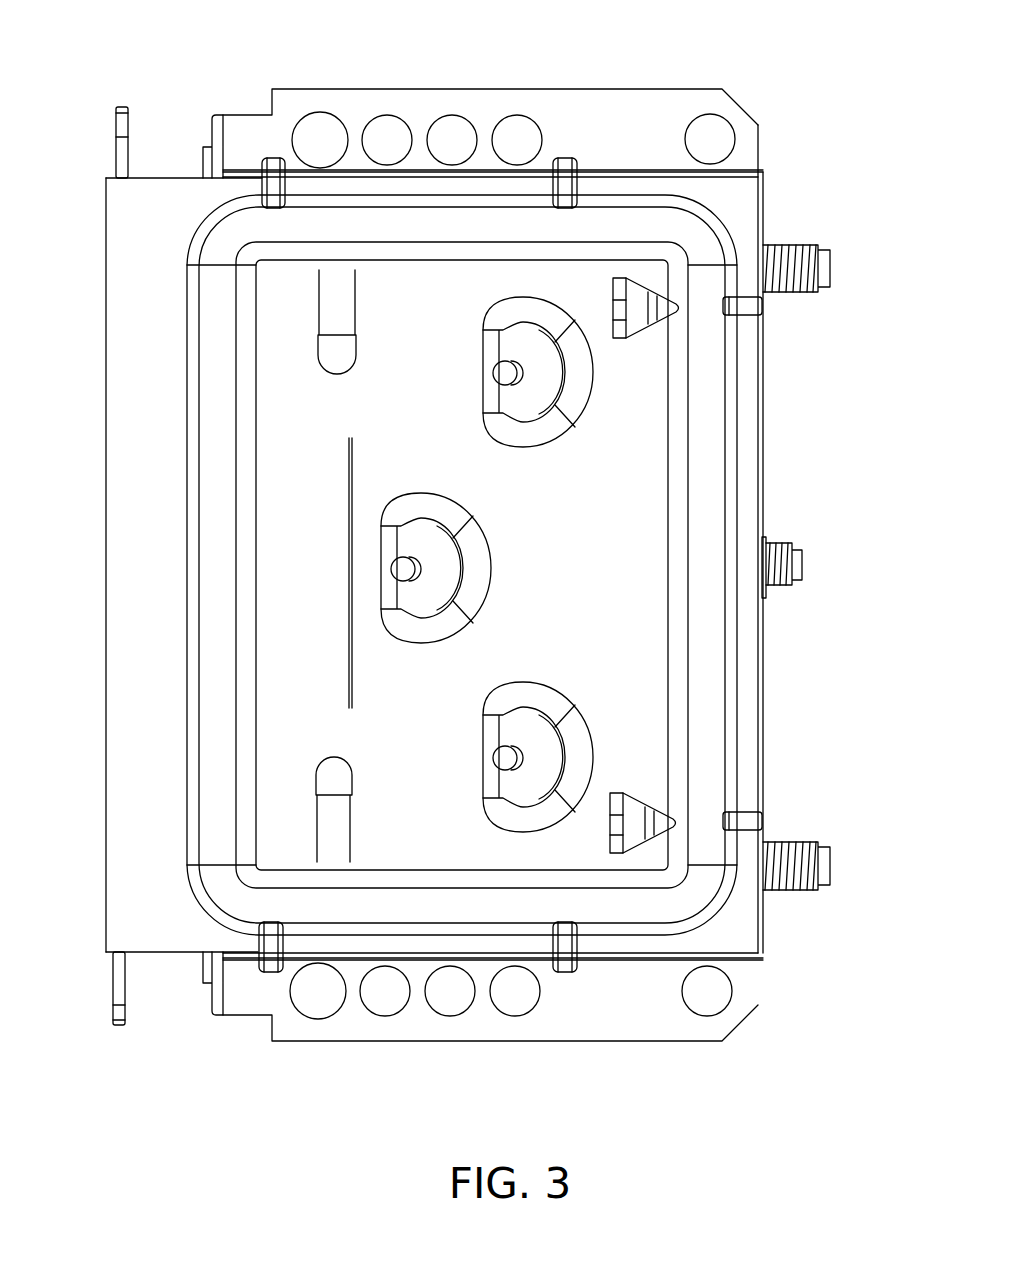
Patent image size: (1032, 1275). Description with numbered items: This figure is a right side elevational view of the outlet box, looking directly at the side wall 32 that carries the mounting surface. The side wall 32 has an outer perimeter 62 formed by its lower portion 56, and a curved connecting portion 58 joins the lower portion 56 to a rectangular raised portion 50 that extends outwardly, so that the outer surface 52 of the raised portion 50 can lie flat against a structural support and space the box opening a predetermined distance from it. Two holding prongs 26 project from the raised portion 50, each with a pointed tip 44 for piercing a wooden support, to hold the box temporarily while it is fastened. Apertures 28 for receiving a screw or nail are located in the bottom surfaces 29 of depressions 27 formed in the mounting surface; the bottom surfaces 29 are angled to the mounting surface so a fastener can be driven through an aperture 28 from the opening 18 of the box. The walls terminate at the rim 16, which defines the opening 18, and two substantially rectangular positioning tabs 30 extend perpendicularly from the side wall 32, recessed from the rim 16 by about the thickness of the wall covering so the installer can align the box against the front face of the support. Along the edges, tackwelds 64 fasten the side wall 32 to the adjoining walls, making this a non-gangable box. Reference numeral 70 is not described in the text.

The rim 16 is at (105, 176).
The opening 18 is at (105, 390).
The holding prongs 26 is at (623, 288).
The depressions 27 is at (572, 343).
The apertures 28 is at (410, 565).
The bottom surfaces 29 is at (530, 362).
The positioning tabs 30 is at (222, 166).
The side wall 32 is at (130, 773).
The pointed tips 44 is at (618, 321).
The raised portion 50 is at (650, 737).
The outer surface 52 is at (736, 202).
The lower portion 56 is at (745, 673).
The curved connecting portion 58 is at (703, 778).
The outer perimeter 62 is at (105, 567).
The tackwelds 64 is at (276, 158).
The holes 70 is at (322, 140).